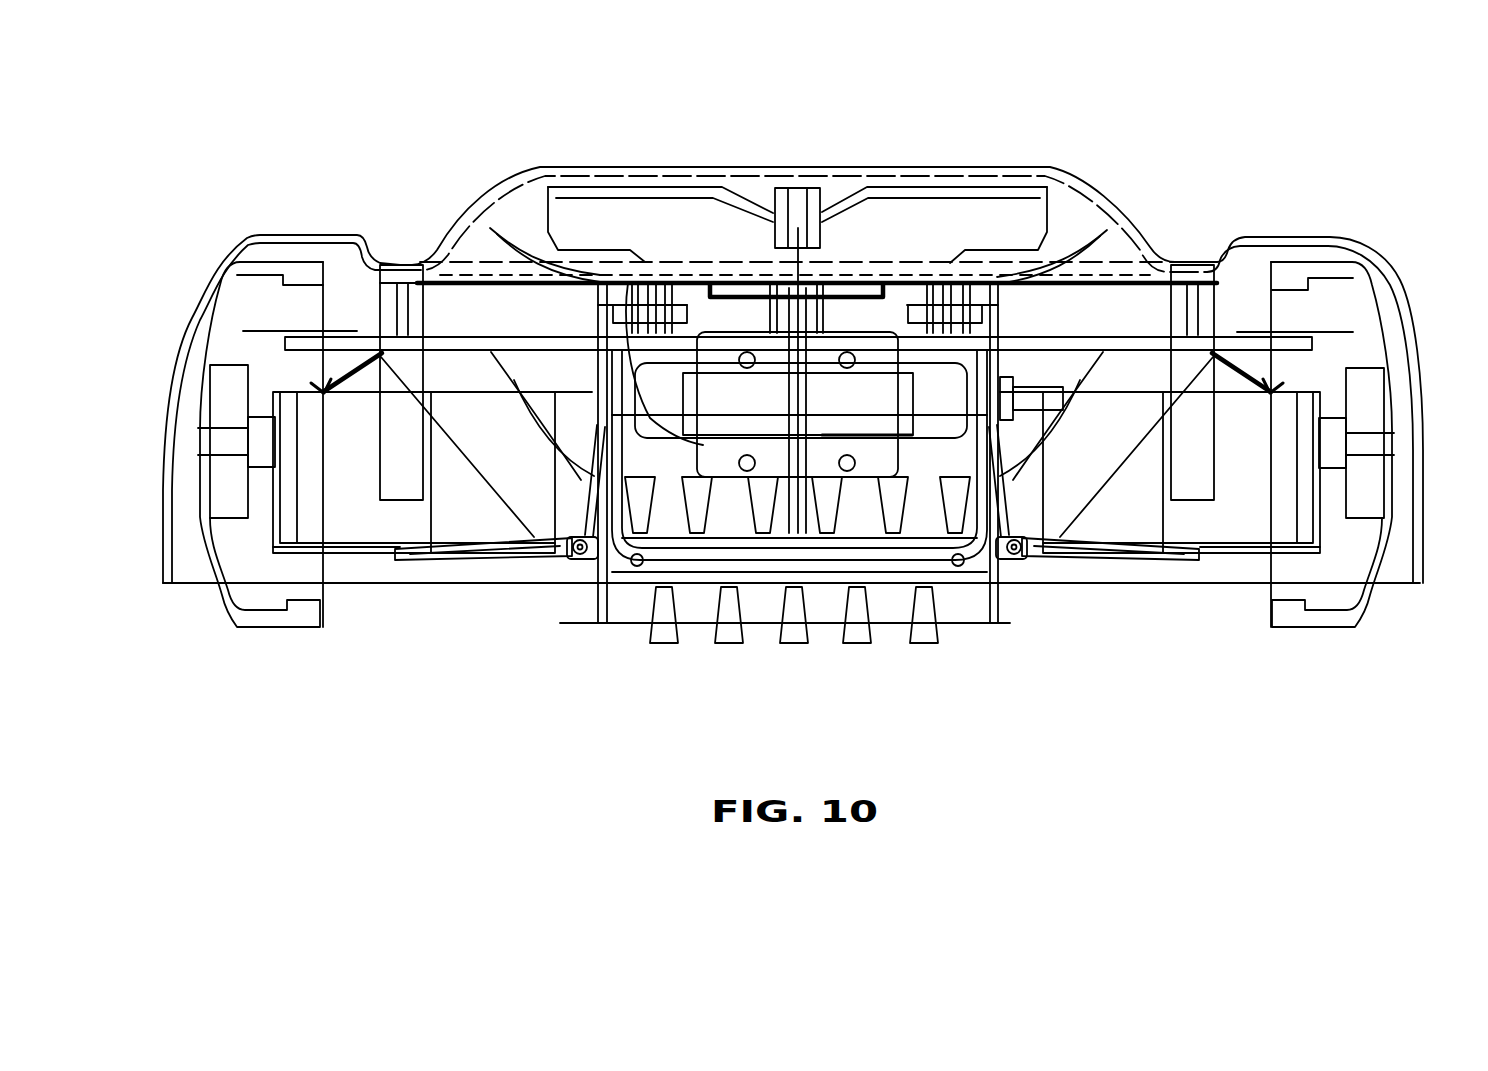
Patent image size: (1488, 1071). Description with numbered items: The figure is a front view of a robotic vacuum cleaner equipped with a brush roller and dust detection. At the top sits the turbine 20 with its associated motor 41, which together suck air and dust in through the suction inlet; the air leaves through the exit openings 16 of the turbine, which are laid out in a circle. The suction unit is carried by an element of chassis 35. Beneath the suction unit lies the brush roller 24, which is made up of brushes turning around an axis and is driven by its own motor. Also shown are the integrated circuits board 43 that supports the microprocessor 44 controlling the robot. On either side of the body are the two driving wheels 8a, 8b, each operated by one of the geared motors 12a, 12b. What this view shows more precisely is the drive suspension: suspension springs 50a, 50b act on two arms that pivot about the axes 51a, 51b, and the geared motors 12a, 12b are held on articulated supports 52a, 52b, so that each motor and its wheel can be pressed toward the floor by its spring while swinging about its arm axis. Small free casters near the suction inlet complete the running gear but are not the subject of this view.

The driving wheel 8a is at (1377, 563).
The driving wheel 8b is at (210, 550).
The geared motor 12a is at (1245, 470).
The geared motor 12b is at (333, 518).
The exit openings 16 is at (600, 167).
The turbine 20 is at (692, 275).
The brush roller 24 is at (825, 562).
The element of chassis 35 is at (530, 342).
The motor 41 is at (678, 228).
The integrated circuits board 43 is at (677, 265).
The microprocessor 44 is at (870, 280).
The suspension spring 50a is at (563, 540).
The suspension spring 50b is at (1018, 490).
The axis 51a is at (590, 565).
The axis 51b is at (1021, 545).
The articulated support 52a is at (1248, 557).
The left arm 52b is at (383, 557).